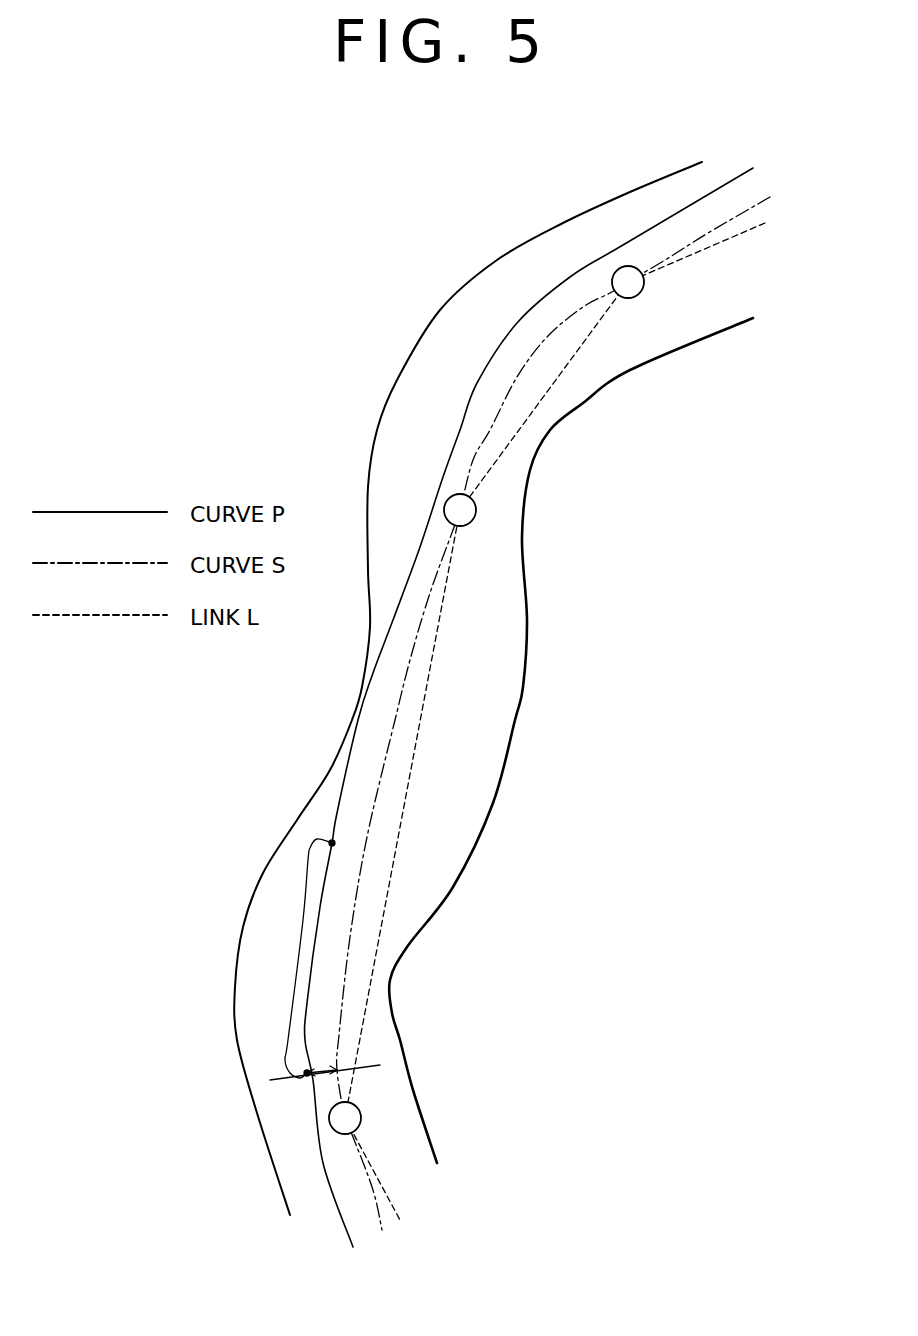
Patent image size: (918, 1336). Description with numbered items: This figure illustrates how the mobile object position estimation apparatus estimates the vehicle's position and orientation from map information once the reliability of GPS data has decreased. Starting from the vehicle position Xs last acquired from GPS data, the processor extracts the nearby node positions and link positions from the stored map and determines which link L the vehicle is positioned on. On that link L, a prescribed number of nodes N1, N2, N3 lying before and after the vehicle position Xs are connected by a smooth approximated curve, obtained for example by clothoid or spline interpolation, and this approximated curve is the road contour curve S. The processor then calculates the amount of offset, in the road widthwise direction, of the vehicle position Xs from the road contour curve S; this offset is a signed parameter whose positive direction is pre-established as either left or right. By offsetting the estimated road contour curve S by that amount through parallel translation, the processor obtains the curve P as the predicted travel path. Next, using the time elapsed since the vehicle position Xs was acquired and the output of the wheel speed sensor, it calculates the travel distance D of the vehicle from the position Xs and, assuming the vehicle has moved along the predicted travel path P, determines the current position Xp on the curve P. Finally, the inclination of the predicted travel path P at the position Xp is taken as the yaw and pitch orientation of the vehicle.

The predicted travel path curve P is at (718, 188).
The road contour curve S is at (757, 190).
The link L is at (583, 347).
The node N1 is at (362, 1110).
The node N2 is at (463, 528).
The node N3 is at (645, 288).
The current position Xp is at (332, 843).
The vehicle position Xs is at (307, 1075).
The travel distance D is at (297, 958).